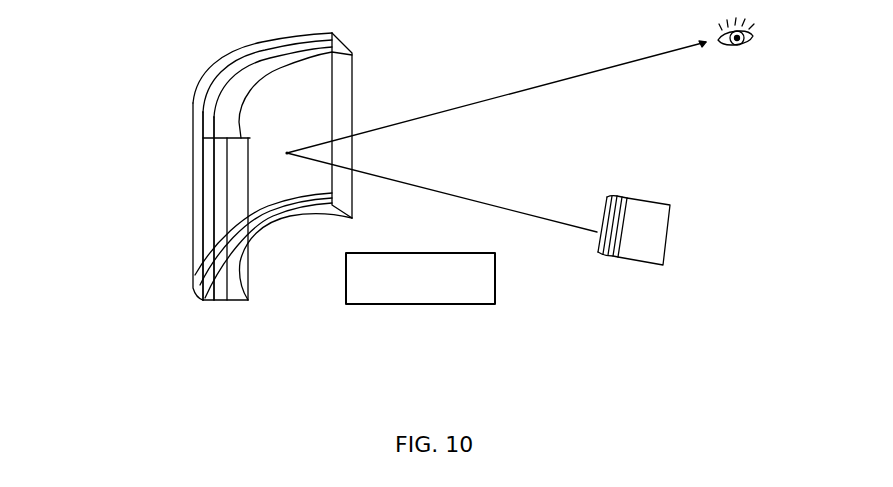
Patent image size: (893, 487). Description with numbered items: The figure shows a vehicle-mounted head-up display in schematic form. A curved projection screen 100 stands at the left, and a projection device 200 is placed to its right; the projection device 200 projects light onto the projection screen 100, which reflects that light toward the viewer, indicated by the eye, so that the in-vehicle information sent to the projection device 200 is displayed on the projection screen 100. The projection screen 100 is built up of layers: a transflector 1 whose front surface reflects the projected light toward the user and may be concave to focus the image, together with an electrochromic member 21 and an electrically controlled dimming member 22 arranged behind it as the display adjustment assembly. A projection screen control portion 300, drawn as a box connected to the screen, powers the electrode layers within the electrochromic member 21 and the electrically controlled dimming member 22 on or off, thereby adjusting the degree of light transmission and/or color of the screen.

The projection screen 100 is at (207, 208).
The transflector 1 is at (227, 300).
The electrochromic member 21 is at (216, 301).
The electrically controlled dimming member 22 is at (207, 302).
The projection device 200 is at (647, 228).
The projection screen control portion 300 is at (346, 278).